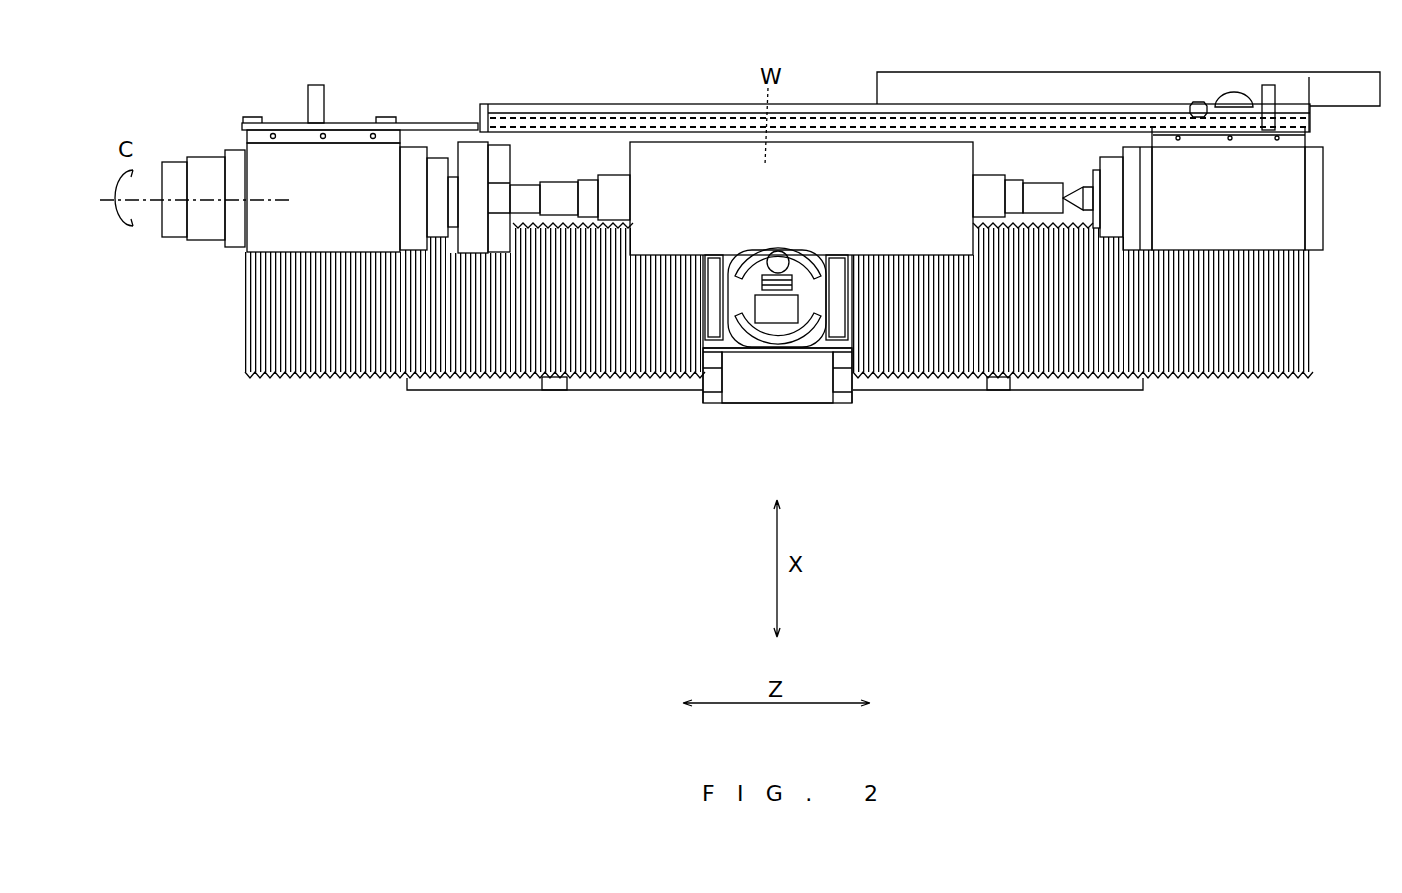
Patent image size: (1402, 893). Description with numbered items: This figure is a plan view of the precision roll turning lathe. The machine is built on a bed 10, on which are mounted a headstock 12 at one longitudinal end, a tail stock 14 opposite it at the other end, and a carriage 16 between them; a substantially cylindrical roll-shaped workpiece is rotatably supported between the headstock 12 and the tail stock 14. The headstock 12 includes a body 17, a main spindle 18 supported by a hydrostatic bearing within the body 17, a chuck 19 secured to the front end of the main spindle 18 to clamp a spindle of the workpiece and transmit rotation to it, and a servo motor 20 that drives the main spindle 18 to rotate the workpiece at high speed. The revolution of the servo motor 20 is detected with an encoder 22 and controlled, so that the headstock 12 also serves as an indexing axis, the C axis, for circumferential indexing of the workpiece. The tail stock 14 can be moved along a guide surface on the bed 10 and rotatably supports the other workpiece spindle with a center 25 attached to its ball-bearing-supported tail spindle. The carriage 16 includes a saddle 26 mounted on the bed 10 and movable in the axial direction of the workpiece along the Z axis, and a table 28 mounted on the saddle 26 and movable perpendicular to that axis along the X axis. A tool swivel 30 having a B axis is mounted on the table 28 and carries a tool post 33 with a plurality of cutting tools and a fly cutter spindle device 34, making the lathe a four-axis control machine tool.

The bed 10 is at (243, 355).
The headstock 12 is at (334, 158).
The tail stock 14 is at (1208, 171).
The carriage 16 is at (780, 414).
The body 17 is at (290, 140).
The main spindle 18 is at (434, 170).
The chuck 19 is at (468, 153).
The servo motor 20 is at (211, 232).
The encoder 22 is at (174, 177).
The center 25 is at (1072, 186).
The saddle 26 is at (817, 392).
The table 28 is at (741, 350).
The tool swivel 30 is at (769, 350).
The tool post 33 is at (805, 285).
The fly cutter spindle device 34 is at (778, 251).